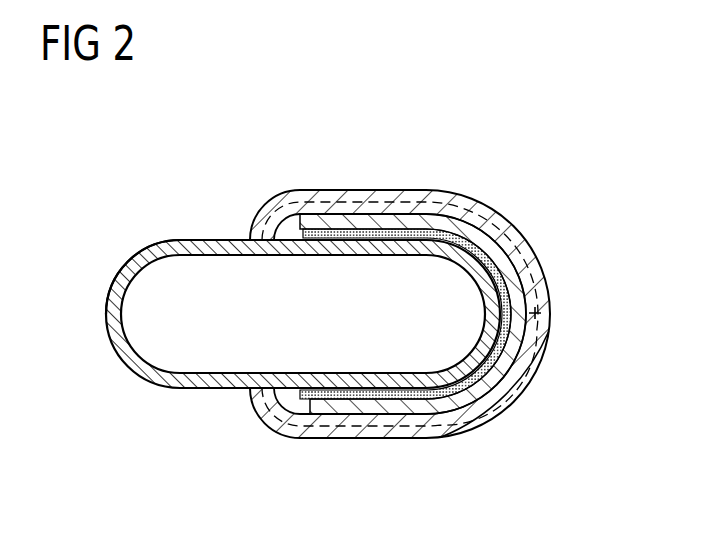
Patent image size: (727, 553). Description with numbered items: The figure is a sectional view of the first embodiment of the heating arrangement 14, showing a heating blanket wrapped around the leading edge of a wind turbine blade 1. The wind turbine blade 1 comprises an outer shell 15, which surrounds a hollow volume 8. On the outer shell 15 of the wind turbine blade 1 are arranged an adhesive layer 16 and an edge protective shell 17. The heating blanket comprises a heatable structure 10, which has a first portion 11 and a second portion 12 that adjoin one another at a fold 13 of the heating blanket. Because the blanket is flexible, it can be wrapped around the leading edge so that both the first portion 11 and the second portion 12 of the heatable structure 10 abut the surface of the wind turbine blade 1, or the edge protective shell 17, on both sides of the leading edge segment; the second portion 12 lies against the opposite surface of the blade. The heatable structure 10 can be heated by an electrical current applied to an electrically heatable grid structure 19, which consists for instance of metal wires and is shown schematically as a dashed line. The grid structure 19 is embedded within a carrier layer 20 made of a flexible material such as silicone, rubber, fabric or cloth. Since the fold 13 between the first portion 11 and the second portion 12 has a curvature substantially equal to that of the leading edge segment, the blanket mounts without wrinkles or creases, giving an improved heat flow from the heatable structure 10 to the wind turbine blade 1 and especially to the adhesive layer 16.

The wind turbine blade 1 is at (148, 242).
The hollow volume 8 is at (155, 343).
The heatable structure 10 is at (375, 195).
The first portion 11 is at (401, 195).
The second portion 12 is at (393, 440).
The fold 13 is at (547, 316).
The heating arrangement 14 is at (433, 314).
The outer shell 15 is at (291, 277).
The adhesive layer 16 is at (303, 220).
The edge protective shell 17 is at (452, 218).
The electrically heatable grid structure 19 is at (512, 384).
The carrier layer 20 is at (547, 282).